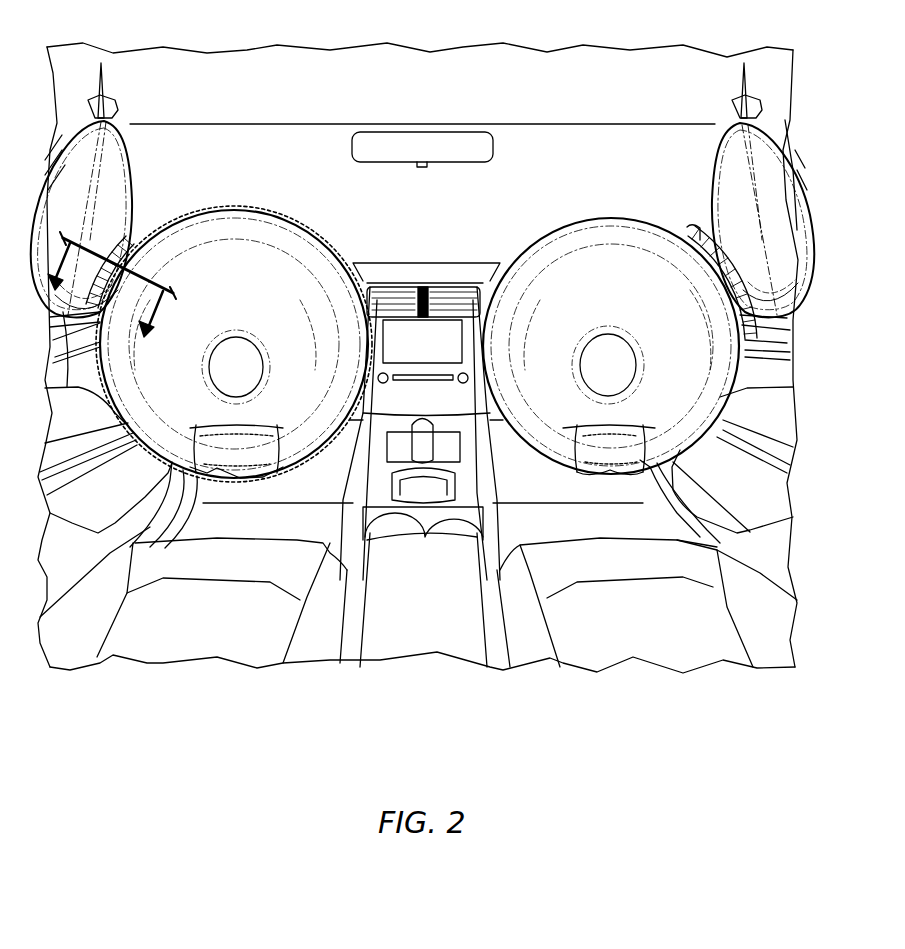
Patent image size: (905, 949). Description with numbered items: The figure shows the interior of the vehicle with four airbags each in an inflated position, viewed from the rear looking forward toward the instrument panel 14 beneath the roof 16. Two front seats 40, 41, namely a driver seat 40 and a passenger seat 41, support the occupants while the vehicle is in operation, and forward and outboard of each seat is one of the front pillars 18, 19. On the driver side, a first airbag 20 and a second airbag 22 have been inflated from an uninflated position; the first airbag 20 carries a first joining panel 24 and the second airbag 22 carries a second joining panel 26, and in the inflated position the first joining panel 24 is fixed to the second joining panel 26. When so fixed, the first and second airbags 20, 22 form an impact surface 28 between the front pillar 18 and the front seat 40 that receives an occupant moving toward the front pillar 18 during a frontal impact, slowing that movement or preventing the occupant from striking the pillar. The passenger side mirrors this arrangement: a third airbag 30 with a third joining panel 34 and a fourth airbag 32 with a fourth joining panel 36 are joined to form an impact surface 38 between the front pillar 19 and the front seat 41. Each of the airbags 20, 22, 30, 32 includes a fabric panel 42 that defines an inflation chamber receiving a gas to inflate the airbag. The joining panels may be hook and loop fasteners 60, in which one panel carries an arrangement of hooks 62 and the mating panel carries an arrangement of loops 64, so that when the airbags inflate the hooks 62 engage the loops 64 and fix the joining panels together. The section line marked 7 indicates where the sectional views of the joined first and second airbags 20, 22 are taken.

The section line 7- 7 is at (119, 280).
The instrument panel 14 is at (430, 270).
The roof 16 is at (760, 77).
The front pillar 18 is at (140, 200).
The front pillar 19 is at (735, 177).
The first airbag 20 is at (293, 263).
The second airbag 22 is at (108, 175).
The first joining panel 24 is at (250, 235).
The second joining panel 26 is at (143, 233).
The impact surface 28 is at (52, 317).
The third airbag 30 is at (567, 237).
The fourth airbag 32 is at (733, 155).
The third joining panel 34 is at (607, 212).
The fourth joining panel 36 is at (715, 228).
The impact surface 38 is at (782, 318).
The front seat 40 is at (193, 645).
The front seat 41 is at (661, 645).
The fabric panel 42 is at (130, 157).
The hook and loop fastener 60 is at (55, 345).
The hook 62 is at (110, 253).
The loop 64 is at (220, 207).